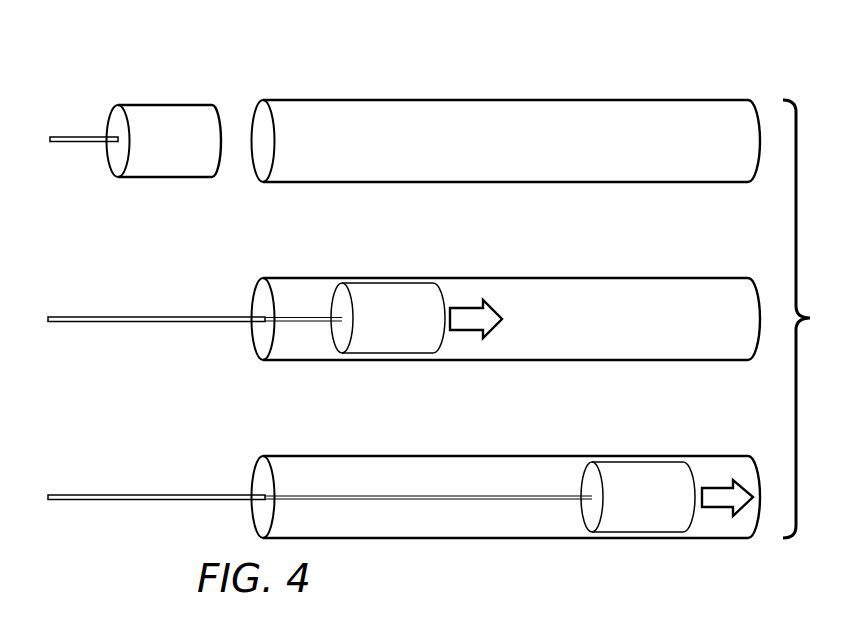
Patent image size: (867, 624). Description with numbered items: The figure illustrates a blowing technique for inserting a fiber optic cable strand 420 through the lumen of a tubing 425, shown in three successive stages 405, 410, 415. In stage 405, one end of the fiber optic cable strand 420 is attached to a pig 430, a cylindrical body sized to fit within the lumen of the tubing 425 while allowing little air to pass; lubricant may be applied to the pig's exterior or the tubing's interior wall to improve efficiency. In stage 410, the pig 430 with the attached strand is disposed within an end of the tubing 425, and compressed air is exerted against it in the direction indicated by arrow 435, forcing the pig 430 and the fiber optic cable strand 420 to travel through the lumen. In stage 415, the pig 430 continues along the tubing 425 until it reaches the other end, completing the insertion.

The first stage 405 is at (131, 67).
The second stage 410 is at (401, 297).
The third stage 415 is at (401, 476).
The fiber optic cable strand 420 is at (68, 145).
The tubing 425 is at (583, 100).
The pig 430 is at (183, 105).
The arrow 435 is at (472, 307).